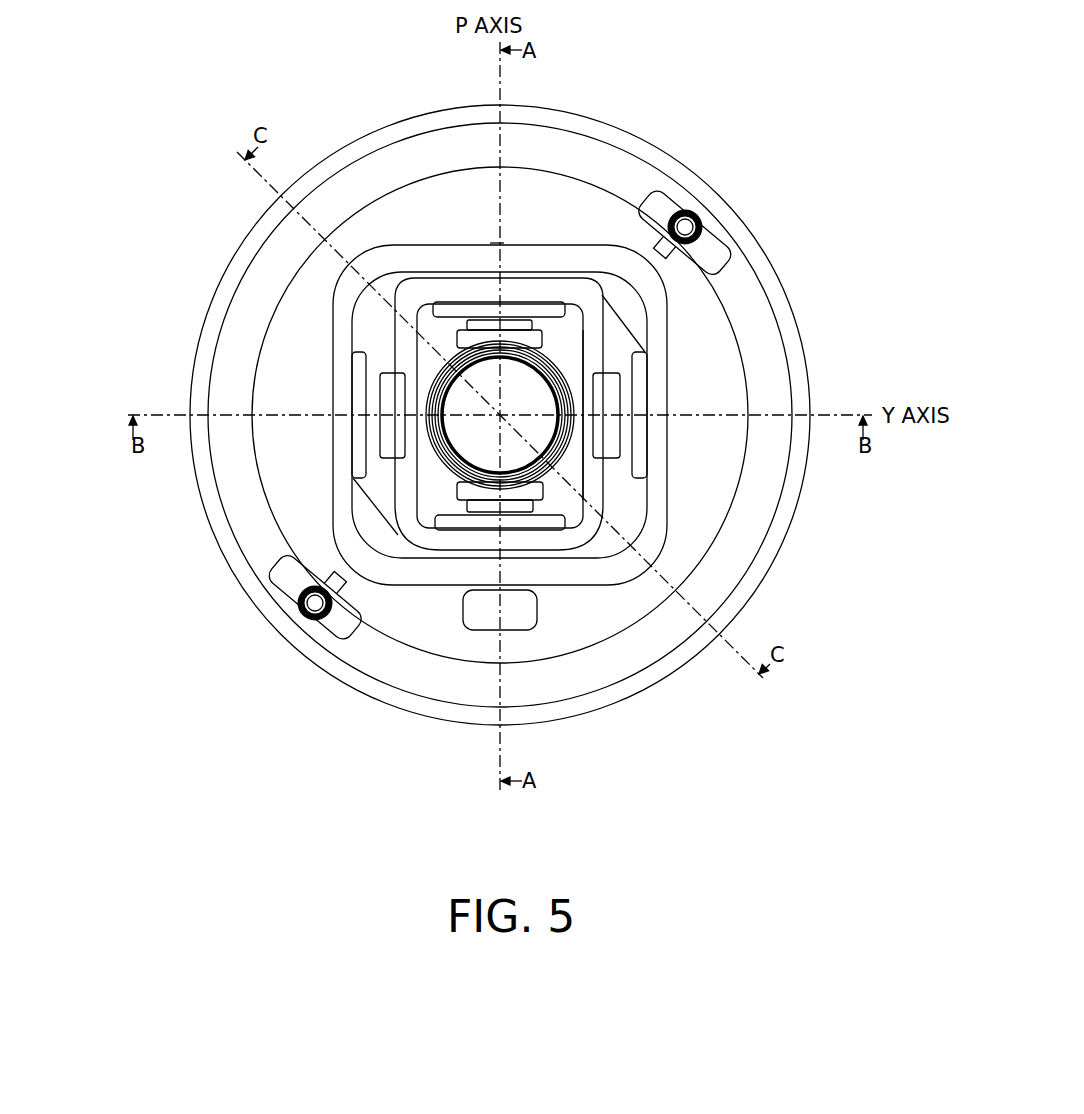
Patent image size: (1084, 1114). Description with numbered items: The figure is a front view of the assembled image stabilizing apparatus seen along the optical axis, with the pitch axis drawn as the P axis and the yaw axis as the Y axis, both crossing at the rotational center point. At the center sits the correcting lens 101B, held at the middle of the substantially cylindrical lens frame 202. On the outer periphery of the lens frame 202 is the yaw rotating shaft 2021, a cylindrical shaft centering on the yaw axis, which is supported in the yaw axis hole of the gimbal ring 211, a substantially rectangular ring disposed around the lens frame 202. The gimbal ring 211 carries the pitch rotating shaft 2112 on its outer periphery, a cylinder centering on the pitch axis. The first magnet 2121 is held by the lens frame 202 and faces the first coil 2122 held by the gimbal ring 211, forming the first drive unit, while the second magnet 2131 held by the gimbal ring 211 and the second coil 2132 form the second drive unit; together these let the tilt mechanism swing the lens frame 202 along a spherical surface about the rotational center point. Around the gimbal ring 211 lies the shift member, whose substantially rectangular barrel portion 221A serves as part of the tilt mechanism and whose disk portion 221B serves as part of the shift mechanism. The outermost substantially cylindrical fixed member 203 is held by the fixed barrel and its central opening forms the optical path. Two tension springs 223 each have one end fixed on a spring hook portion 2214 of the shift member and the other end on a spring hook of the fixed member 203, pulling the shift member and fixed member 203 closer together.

The correcting lens 101B is at (477, 422).
The lens frame 202 is at (453, 440).
The yaw rotating shaft 2021 is at (585, 393).
The fixed member 203 is at (707, 633).
The gimbal ring 211 is at (408, 508).
The pitch rotating shaft 2112 is at (502, 242).
The first magnet 2121 is at (482, 492).
The first coil 2122 is at (493, 505).
The second magnet 2131 is at (378, 388).
The second coil 2132 is at (362, 352).
The barrel portion 221A is at (622, 553).
The disk portion 221B is at (587, 605).
The spring hook portion 2214 is at (676, 252).
The spring 223 is at (682, 210).